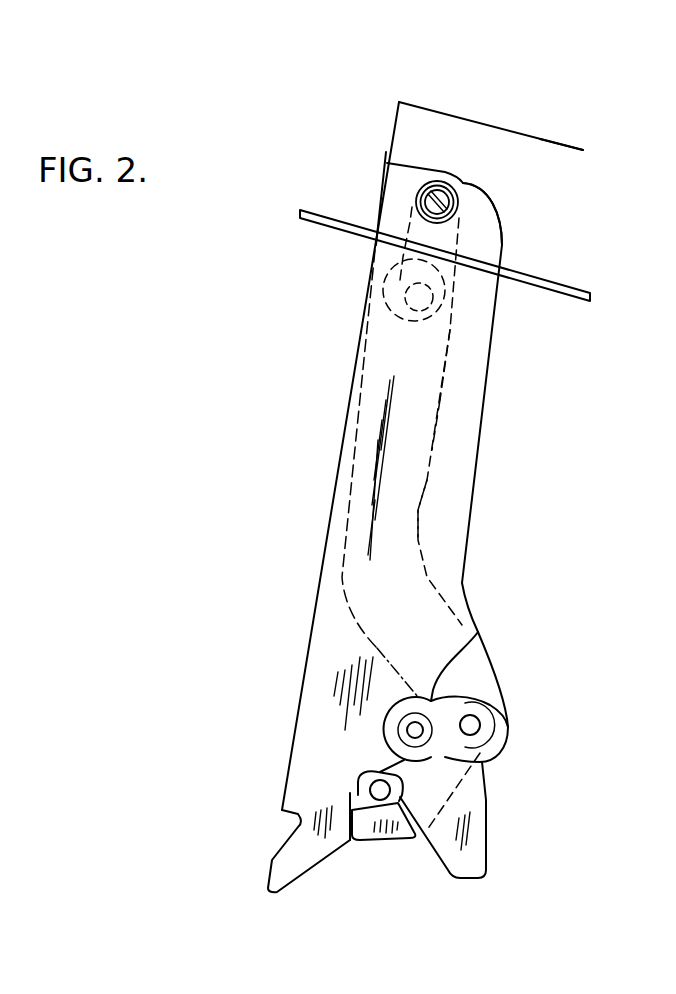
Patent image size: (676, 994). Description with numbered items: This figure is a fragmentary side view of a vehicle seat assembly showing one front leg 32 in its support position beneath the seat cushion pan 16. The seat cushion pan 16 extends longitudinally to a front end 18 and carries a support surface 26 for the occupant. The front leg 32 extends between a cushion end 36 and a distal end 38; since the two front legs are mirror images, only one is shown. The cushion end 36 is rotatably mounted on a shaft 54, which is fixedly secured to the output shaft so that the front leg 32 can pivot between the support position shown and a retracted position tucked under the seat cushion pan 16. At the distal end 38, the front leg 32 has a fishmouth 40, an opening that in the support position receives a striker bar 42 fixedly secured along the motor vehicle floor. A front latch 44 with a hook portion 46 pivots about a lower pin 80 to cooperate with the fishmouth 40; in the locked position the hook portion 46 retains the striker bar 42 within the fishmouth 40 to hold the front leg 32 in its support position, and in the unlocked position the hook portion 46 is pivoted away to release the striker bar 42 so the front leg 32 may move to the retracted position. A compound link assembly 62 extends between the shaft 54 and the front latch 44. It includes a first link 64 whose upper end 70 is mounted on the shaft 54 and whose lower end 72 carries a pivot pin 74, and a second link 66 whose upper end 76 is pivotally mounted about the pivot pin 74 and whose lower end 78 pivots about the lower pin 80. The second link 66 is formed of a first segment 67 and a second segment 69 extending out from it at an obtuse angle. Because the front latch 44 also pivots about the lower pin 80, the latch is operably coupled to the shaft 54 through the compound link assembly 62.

The seat cushion pan 16 is at (475, 130).
The front end 18 is at (392, 117).
The support surface 26 is at (558, 139).
The front leg 32 is at (340, 427).
The cushion end 36 is at (362, 213).
The distal end 38 is at (267, 860).
The fishmouth 40 is at (370, 774).
The striker bar 42 is at (373, 792).
The front latch 44 is at (468, 789).
The hook portion 46 is at (368, 846).
The shaft 54 is at (463, 187).
The compound link assembly 62 is at (466, 325).
The first link 64 is at (460, 228).
The second link 66 is at (420, 514).
The first segment 67 is at (421, 380).
The second segment 69 is at (377, 648).
The upper end 70 is at (415, 201).
The lower end 72 is at (393, 295).
The pivot pin 74 is at (402, 306).
The upper end 76 is at (452, 288).
The lower end 78 is at (505, 737).
The lower pin 80 is at (480, 726).